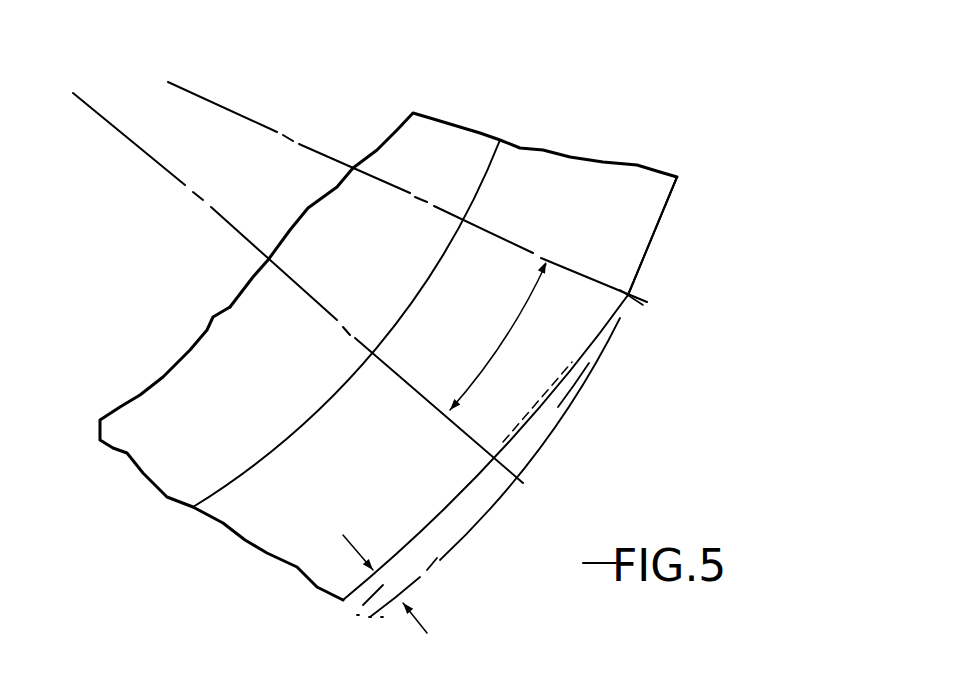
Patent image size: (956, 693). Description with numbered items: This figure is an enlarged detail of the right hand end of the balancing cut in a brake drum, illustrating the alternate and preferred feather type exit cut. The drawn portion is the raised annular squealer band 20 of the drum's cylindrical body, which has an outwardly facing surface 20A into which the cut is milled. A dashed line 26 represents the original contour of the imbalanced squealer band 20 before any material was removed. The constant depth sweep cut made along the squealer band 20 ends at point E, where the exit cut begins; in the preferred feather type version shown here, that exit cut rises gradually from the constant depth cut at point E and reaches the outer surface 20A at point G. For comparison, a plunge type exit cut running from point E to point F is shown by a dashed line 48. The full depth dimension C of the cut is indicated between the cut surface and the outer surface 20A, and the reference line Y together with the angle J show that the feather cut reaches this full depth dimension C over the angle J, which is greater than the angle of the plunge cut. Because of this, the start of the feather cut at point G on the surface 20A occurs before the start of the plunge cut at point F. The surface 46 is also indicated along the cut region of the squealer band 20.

The squealer band 20 is at (236, 333).
The outwardly facing surface 20A is at (668, 213).
The dashed line 26 is at (490, 507).
The side surface 46 is at (580, 407).
The dashed line 48 is at (548, 385).
The reference axis line Y is at (247, 117).
The angle J is at (507, 337).
The point G is at (630, 293).
The point F is at (587, 363).
The point E is at (497, 458).
The full depth dimension C is at (356, 612).